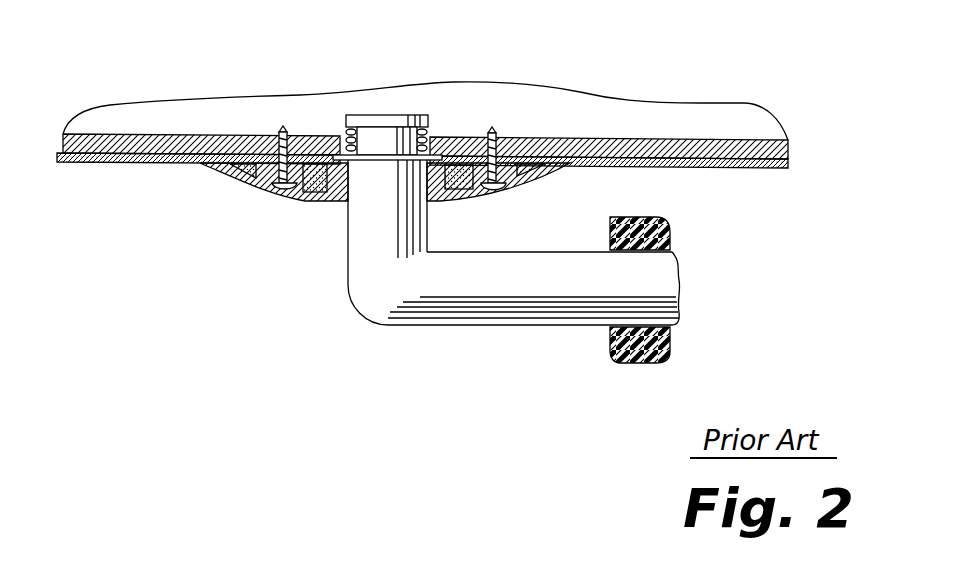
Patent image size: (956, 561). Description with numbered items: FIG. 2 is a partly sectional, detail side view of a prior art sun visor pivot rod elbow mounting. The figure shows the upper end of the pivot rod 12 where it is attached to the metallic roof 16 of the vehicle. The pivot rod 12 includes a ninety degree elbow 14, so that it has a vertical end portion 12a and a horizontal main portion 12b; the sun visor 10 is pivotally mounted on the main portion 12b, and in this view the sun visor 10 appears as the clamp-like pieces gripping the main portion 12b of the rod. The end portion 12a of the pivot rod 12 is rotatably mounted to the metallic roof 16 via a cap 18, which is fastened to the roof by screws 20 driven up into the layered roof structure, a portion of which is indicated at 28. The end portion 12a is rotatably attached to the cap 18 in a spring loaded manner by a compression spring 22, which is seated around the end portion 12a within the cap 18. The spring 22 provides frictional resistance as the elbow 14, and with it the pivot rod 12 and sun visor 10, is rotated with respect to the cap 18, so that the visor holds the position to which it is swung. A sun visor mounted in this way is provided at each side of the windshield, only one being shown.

The sun visor 10 is at (672, 214).
The pivot rod 12 is at (457, 296).
The end portion 12a is at (347, 255).
The main portion 12b is at (590, 327).
The elbow 14 is at (344, 306).
The metallic roof 16 is at (195, 135).
The cap 18 is at (303, 195).
The screws 20 is at (273, 193).
The compression spring 22 is at (343, 133).
The inner liner layer 28 is at (175, 162).